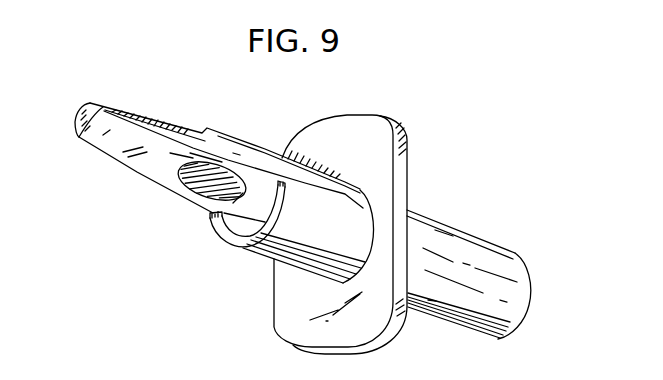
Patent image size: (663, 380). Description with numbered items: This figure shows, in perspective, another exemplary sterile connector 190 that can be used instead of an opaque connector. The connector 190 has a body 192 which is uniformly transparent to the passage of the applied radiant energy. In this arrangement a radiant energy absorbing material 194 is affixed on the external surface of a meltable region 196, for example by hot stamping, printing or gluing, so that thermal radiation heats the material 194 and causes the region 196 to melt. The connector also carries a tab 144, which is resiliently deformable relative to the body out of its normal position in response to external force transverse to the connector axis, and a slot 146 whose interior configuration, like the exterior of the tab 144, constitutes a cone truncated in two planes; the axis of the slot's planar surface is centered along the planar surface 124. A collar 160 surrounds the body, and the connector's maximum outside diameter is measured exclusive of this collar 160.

The tab 144 is at (152, 133).
The slot 146 is at (268, 201).
The collar 160 is at (380, 151).
The connector 190 is at (463, 219).
The body 192 is at (300, 242).
The radiant energy absorbing material 194 is at (188, 190).
The meltable region 196 is at (157, 174).
The planar surface 124 is at (215, 221).